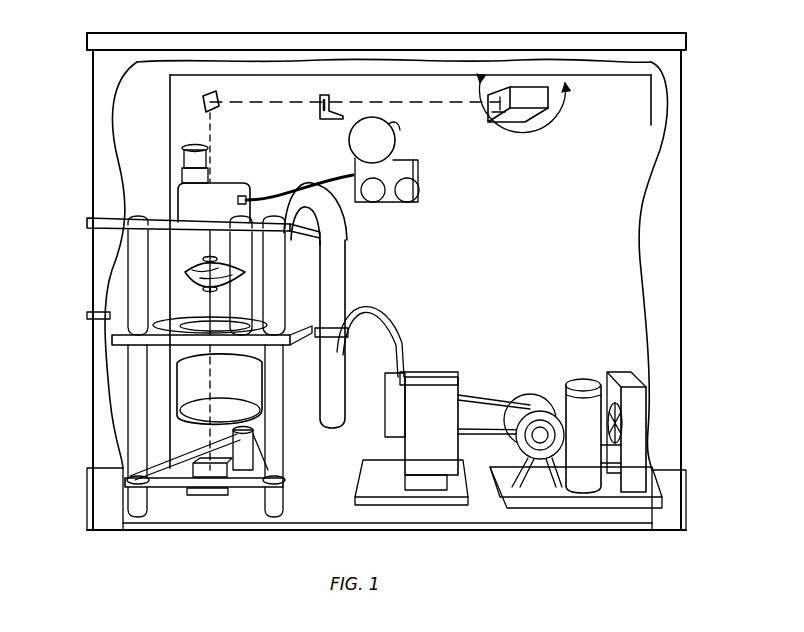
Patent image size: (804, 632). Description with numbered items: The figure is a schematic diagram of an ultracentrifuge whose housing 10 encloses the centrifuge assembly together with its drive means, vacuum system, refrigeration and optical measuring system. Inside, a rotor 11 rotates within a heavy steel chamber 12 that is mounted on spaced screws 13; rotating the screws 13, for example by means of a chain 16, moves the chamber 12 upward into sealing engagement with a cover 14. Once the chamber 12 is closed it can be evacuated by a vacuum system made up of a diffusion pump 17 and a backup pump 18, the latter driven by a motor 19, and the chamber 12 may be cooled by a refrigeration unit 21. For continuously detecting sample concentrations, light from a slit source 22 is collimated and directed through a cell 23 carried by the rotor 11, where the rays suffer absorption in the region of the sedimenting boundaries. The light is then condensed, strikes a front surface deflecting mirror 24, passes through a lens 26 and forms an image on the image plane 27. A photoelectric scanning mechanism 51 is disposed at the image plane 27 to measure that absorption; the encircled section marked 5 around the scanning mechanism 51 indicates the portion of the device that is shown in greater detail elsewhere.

The housing 10 is at (104, 72).
The rotor 11 is at (185, 268).
The heavy steel chamber 12 is at (160, 393).
The spaced screws 13 is at (283, 270).
The cover 14 is at (160, 222).
The chain 16 is at (167, 488).
The diffusion pump 17 is at (333, 420).
The backup pump 18 is at (430, 377).
The motor 19 is at (528, 425).
The refrigeration unit 21 is at (625, 370).
The slit source 22 is at (211, 468).
The cell 23 is at (208, 285).
The front surface deflecting mirror 24 is at (218, 93).
The lens 26 is at (330, 94).
The image plane 27 is at (499, 110).
The photoelectric scanning mechanism 51 is at (527, 90).
The section line 5 is at (519, 106).